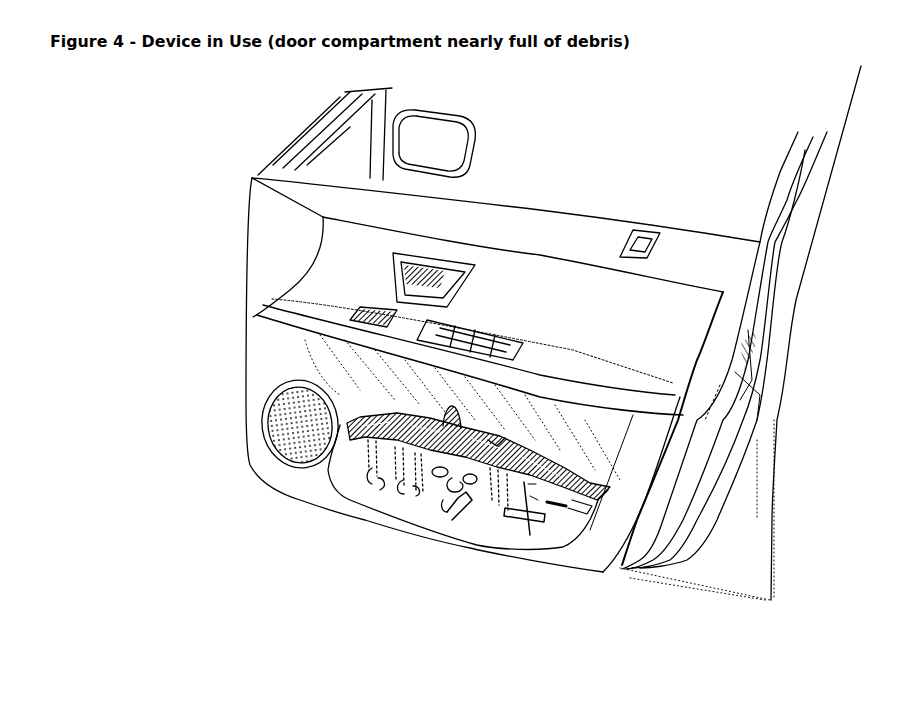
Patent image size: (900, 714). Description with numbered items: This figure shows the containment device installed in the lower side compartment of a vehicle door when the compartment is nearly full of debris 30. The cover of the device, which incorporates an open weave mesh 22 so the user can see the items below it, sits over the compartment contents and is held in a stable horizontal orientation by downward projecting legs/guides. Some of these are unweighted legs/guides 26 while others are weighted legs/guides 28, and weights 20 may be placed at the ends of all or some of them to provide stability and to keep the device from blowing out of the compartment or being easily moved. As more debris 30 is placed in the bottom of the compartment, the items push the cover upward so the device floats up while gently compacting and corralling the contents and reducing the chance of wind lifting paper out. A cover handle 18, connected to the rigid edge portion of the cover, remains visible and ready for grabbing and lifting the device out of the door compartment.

The cover handle 18 is at (457, 407).
The weights 20 is at (540, 548).
The mesh 22 is at (495, 443).
The unweighted legs/guides 26 is at (367, 463).
The weighted legs/guides 28 is at (568, 505).
The debris 30 is at (447, 507).